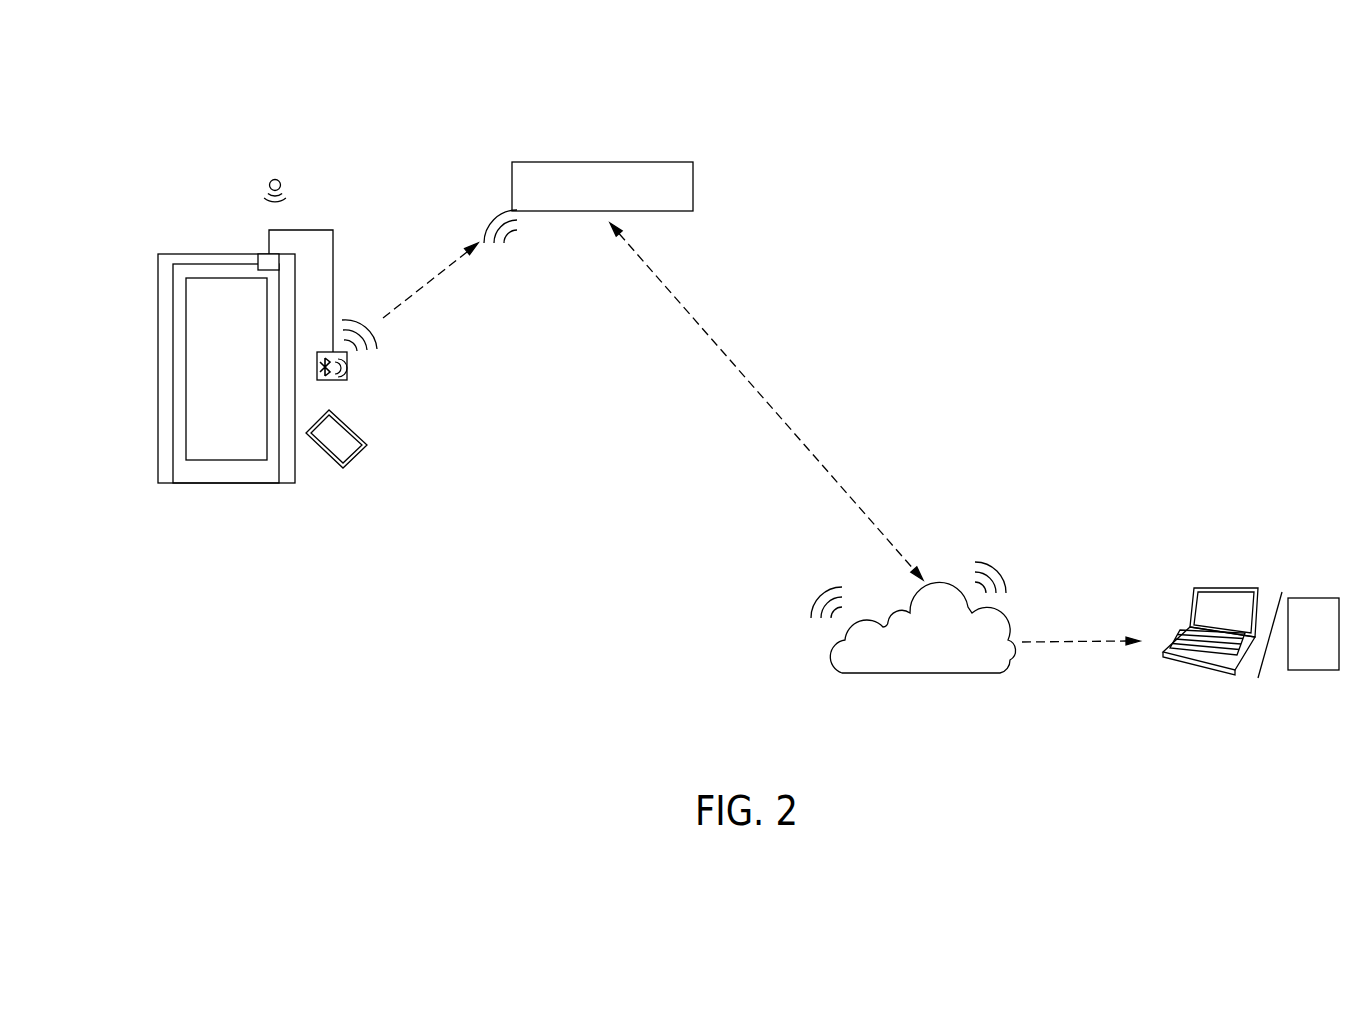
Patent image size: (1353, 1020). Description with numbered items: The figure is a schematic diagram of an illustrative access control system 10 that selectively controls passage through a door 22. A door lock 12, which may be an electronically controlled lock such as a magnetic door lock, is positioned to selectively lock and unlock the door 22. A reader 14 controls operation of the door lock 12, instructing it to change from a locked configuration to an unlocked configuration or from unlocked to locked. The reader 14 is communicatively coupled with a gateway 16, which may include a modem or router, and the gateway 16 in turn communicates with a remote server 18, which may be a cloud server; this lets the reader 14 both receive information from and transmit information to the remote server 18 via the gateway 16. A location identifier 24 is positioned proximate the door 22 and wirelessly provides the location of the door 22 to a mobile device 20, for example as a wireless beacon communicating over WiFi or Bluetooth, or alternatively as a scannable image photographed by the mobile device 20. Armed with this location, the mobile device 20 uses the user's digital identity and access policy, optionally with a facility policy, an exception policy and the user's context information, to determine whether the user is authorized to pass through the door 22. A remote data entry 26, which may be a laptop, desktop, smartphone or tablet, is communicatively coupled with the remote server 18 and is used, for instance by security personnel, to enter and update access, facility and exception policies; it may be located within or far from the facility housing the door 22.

The access control system 10 is at (1013, 103).
The door lock 12 is at (258, 258).
The reader 14 is at (347, 366).
The gateway 16 is at (603, 162).
The remote server 18 is at (922, 673).
The mobile device 20 is at (355, 458).
The door 22 is at (158, 369).
The location identifier 24 is at (278, 180).
The remote data entry 26 is at (1268, 555).